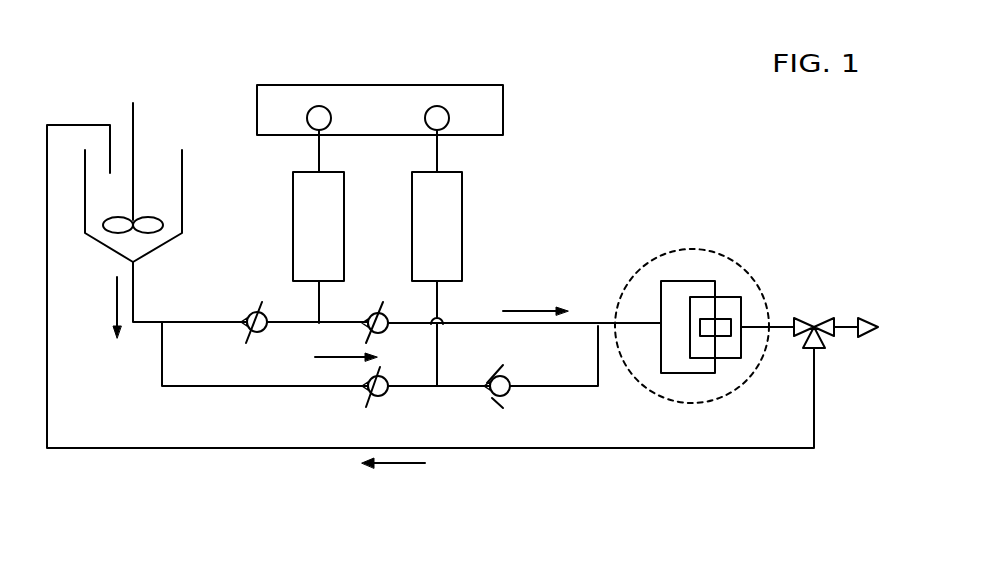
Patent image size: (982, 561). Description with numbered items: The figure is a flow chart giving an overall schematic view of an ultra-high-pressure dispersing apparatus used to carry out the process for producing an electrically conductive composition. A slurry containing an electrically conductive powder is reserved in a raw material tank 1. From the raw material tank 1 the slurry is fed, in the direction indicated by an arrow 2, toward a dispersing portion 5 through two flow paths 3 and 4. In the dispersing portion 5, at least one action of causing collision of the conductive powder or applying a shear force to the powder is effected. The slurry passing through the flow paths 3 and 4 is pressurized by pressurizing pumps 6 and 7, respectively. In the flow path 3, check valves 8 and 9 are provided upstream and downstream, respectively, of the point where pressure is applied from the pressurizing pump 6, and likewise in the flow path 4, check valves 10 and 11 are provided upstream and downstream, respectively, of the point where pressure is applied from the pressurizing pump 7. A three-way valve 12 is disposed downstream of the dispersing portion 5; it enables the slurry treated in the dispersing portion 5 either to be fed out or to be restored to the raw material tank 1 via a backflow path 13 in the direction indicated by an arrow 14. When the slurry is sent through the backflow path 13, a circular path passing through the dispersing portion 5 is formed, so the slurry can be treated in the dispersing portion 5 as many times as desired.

The raw material tank 1 is at (182, 180).
The arrow 2 is at (115, 298).
The flow path 3 is at (197, 320).
The flow path 4 is at (228, 389).
The dispersing portion 5 is at (690, 250).
The pressurizing pump 6 is at (293, 199).
The pressurizing pump 7 is at (462, 197).
The check valve 8 is at (252, 309).
The check valve 9 is at (377, 307).
The check valve 10 is at (365, 401).
The check valve 11 is at (485, 398).
The three-way valve 12 is at (814, 318).
The backflow path 13 is at (605, 450).
The arrow 14 is at (400, 465).